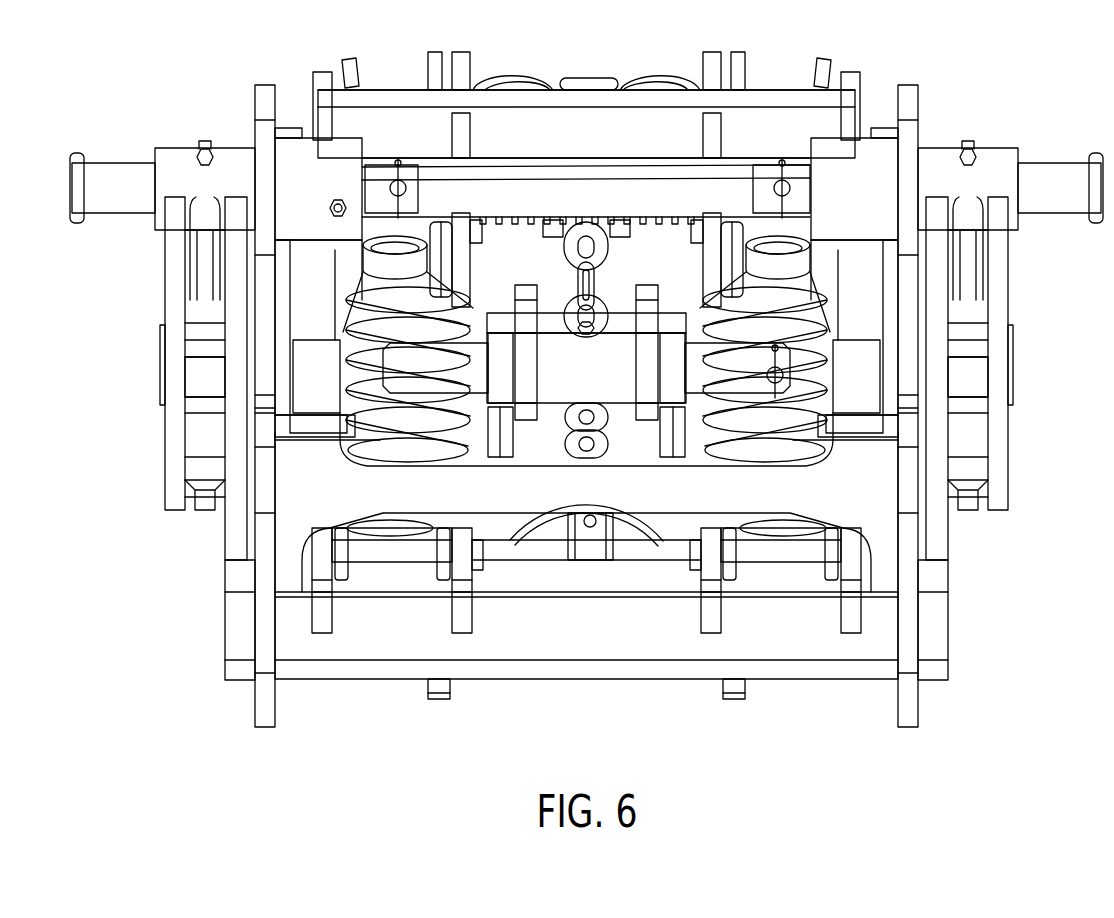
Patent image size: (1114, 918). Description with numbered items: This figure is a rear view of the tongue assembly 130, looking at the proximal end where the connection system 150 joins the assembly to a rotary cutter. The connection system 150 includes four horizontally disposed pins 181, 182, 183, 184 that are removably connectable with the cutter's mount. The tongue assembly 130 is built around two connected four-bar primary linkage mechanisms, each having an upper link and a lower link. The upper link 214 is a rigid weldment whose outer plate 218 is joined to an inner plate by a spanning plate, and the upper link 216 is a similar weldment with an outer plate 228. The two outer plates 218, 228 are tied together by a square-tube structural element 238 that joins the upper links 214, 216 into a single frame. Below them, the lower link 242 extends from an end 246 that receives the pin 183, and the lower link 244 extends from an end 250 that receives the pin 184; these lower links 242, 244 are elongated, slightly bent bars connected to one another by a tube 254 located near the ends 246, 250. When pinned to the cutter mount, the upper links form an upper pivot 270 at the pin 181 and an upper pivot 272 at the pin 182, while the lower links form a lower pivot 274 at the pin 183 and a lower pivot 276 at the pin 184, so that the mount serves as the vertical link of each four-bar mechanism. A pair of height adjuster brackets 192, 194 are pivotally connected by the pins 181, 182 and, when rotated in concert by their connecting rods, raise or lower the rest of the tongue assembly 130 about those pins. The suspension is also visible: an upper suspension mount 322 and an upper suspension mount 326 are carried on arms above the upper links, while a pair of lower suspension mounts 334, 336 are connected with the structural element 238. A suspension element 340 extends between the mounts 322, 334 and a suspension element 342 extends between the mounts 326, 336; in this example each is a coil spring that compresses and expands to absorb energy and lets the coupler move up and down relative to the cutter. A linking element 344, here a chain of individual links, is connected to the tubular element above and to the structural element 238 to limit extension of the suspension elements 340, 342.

The tongue assembly 130 is at (247, 57).
The connection system 150 is at (782, 140).
The pin 181 is at (803, 198).
The pin 182 is at (392, 185).
The pin 183 is at (720, 378).
The pin 184 is at (390, 378).
The height adjuster bracket 192 is at (997, 358).
The height adjuster bracket 194 is at (175, 330).
The upper link 214 is at (905, 300).
The upper link 216 is at (268, 300).
The outer plate 218 is at (910, 137).
The outer plate 228 is at (266, 138).
The structural element 238 is at (566, 643).
The lower link 242 is at (648, 420).
The lower link 244 is at (525, 420).
The end 246 is at (647, 350).
The end 250 is at (527, 350).
The tube 254 is at (566, 378).
The upper pivot 270 is at (795, 184).
The upper pivot 272 is at (357, 180).
The lower pivot 274 is at (697, 379).
The lower pivot 276 is at (480, 366).
The upper suspension mount 322 is at (757, 241).
The upper suspension mount 326 is at (414, 241).
The lower suspension mount 334 is at (781, 530).
The lower suspension mount 336 is at (394, 530).
The suspension element 340 is at (818, 333).
The suspension element 342 is at (358, 342).
The linking element 344 is at (622, 247).